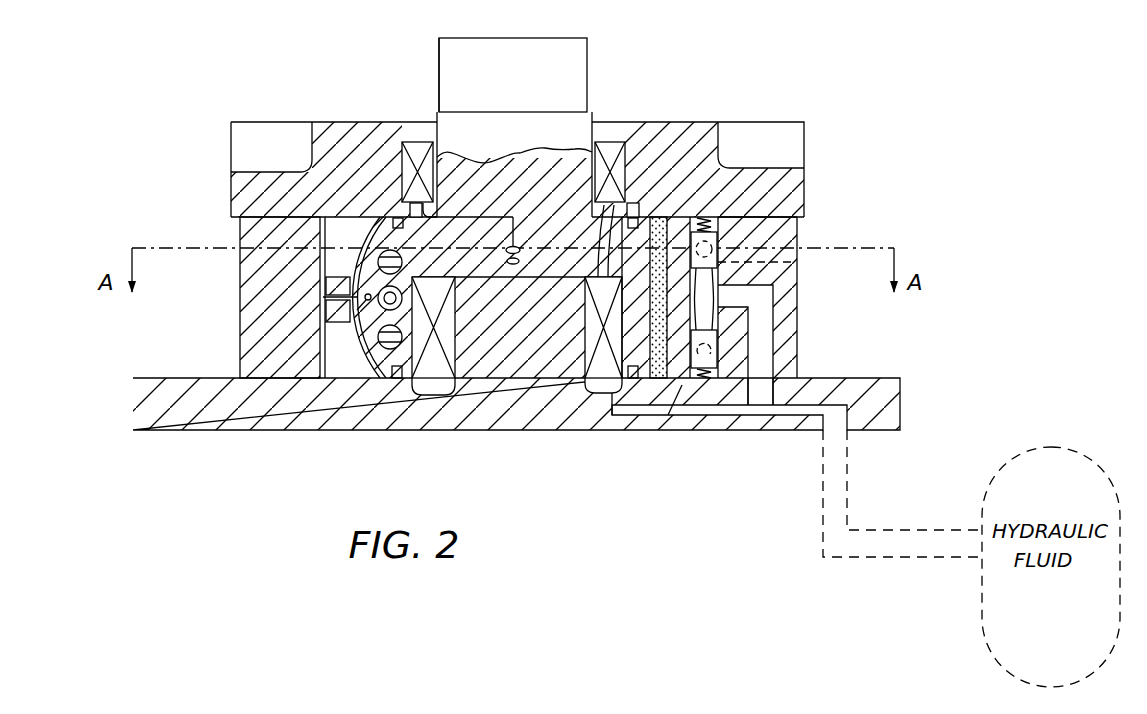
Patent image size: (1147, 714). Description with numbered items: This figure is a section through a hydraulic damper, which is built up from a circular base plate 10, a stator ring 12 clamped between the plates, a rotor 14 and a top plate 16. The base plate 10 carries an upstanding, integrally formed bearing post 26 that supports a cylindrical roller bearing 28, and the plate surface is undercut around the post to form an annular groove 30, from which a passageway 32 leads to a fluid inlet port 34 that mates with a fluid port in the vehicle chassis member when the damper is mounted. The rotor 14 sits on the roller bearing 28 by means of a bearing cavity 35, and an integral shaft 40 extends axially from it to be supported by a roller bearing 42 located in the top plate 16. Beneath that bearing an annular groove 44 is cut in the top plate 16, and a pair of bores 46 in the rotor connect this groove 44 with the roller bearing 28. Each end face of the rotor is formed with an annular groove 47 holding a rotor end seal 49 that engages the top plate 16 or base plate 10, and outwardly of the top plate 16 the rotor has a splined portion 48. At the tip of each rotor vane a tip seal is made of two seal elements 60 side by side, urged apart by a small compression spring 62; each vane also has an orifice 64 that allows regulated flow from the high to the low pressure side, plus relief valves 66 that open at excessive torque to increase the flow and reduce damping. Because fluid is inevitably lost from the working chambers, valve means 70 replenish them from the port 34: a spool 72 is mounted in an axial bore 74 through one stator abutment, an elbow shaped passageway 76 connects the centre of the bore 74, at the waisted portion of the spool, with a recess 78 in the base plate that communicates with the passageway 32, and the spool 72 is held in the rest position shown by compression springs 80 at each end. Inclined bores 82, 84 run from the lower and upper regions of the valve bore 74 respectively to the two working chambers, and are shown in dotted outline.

The circular base plate 10 is at (905, 405).
The stator ring 12 is at (802, 350).
The rotor 14 is at (590, 84).
The top plate 16 is at (808, 182).
The bearing post 26 is at (503, 345).
The cylindrical roller bearing 28 is at (440, 372).
The annular groove 30 is at (431, 385).
The passageway 32 is at (620, 416).
The fluid inlet port 34 is at (841, 431).
The bearing cavity 35 is at (595, 385).
The integral shaft 40 is at (463, 130).
The roller bearing 42 is at (402, 165).
The annular groove 44 is at (410, 212).
The bores 46 is at (600, 228).
The annular groove 47 is at (653, 218).
The splined portion 48 is at (438, 54).
The rotor end seal 49 is at (636, 218).
The seal elements 60 is at (316, 235).
The compression spring 62 is at (326, 298).
The orifice 64 is at (366, 318).
The relief valves 66 is at (380, 266).
The valve means 70 is at (775, 278).
The spool 72 is at (722, 380).
The axial bore 74 is at (792, 226).
The elbow shaped passageway 76 is at (776, 300).
The recess 78 is at (778, 393).
The compression springs 80 is at (706, 220).
The inclined bore 82 is at (664, 430).
The inclined bore 84 is at (793, 263).